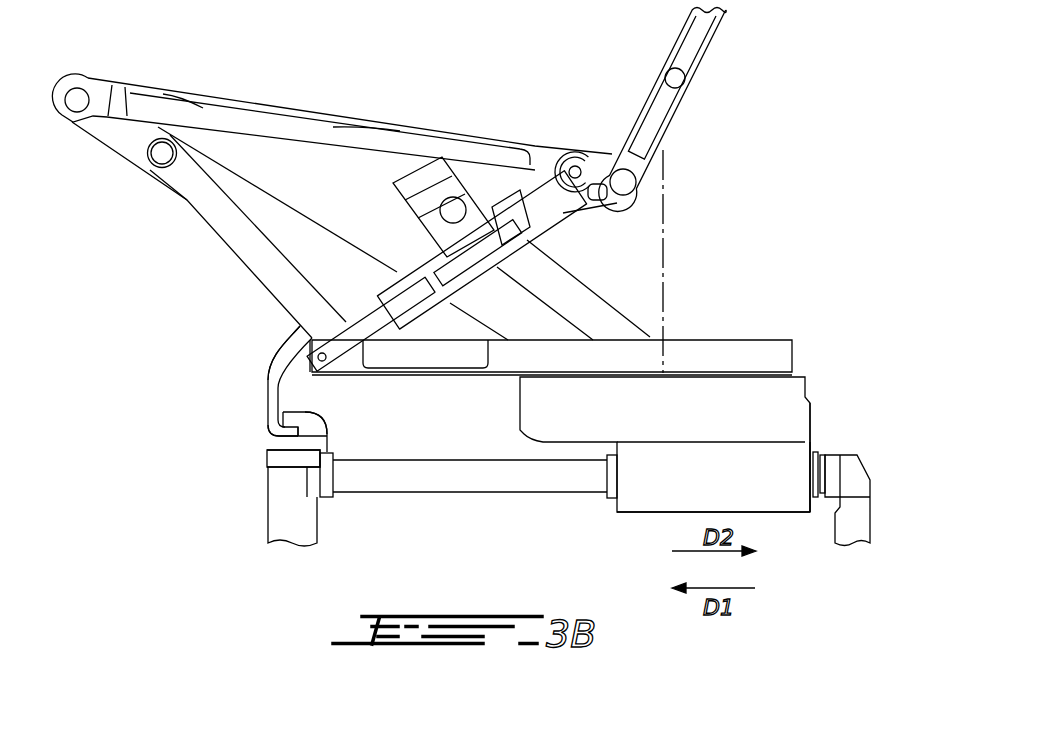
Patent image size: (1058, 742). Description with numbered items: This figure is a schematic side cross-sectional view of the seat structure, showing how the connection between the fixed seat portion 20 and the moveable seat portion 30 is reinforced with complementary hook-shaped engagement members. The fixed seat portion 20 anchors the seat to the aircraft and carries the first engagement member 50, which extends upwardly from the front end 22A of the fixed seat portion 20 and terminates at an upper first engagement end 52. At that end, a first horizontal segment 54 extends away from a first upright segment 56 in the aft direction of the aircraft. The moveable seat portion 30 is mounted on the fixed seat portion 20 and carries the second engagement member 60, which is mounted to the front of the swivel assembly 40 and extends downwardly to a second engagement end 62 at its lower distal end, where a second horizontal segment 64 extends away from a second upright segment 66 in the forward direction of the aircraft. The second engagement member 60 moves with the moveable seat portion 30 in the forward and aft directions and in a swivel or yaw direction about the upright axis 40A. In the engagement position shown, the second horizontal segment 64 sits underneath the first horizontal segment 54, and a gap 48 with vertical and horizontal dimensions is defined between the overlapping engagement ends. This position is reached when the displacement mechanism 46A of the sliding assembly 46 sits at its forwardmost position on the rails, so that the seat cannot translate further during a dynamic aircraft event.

The fixed seat portion 20 is at (892, 470).
The front end 22A is at (240, 505).
The moveable seat portion 30 is at (722, 168).
The swivel assembly 40 is at (822, 322).
The upright axis 40A is at (667, 243).
The sliding assembly 46 is at (846, 412).
The displacement mechanism 46A is at (778, 490).
The gap 48 is at (307, 470).
The first engagement member 50 is at (347, 468).
The first engagement end 52 is at (345, 420).
The first horizontal segment 54 is at (295, 412).
The first upright segment 56 is at (313, 440).
The second engagement member 60 is at (270, 326).
The second engagement end 62 is at (240, 418).
The second horizontal segment 64 is at (293, 437).
The second upright segment 66 is at (273, 412).